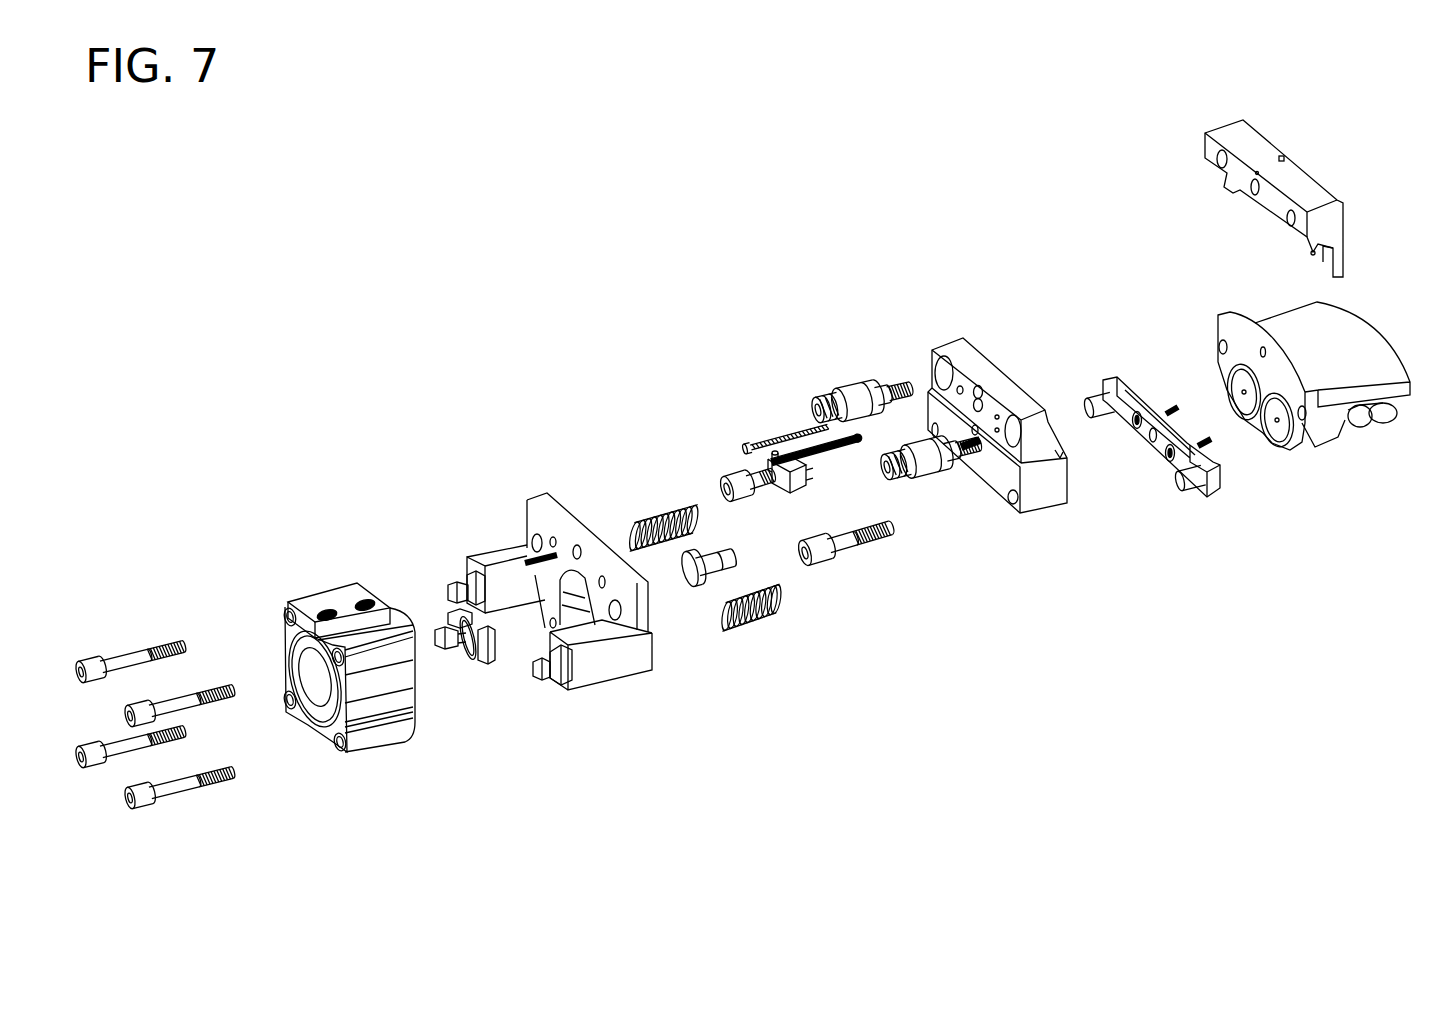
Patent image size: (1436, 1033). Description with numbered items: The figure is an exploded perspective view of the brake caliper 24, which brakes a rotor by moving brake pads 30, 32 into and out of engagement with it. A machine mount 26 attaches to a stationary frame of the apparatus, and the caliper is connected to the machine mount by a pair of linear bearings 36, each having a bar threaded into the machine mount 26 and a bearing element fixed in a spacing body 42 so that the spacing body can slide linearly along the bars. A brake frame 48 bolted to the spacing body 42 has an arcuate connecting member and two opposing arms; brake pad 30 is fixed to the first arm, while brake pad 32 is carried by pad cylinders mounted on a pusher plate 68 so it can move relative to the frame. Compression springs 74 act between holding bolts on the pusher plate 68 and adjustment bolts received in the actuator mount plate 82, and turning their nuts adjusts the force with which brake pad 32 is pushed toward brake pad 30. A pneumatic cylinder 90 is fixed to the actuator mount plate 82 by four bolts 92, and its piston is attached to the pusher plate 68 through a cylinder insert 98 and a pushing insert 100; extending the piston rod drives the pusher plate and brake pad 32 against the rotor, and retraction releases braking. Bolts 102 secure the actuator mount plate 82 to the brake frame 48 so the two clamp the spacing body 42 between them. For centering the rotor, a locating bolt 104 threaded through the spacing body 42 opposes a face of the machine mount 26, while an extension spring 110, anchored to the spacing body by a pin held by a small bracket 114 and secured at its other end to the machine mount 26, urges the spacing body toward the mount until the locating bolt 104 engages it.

The brake caliper 24 is at (488, 222).
The machine mount 26 is at (1256, 127).
The brake pad 30 is at (1360, 428).
The brake pad 32 is at (1330, 434).
The linear bearings 36 is at (857, 364).
The spacing body 42 is at (993, 334).
The brake frame 48 is at (1400, 330).
The pusher plate 68 is at (1212, 492).
The compression spring 74 is at (640, 518).
The actuator mount plate 82 is at (530, 485).
The pneumatic cylinder 90 is at (393, 755).
The bolts 92 is at (123, 661).
The cylinder insert 98 is at (485, 662).
The pushing insert 100 is at (686, 582).
The bolts 102 is at (733, 478).
The locating bolt 104 is at (788, 432).
The extension spring 110 is at (845, 450).
The bracket 114 is at (778, 487).